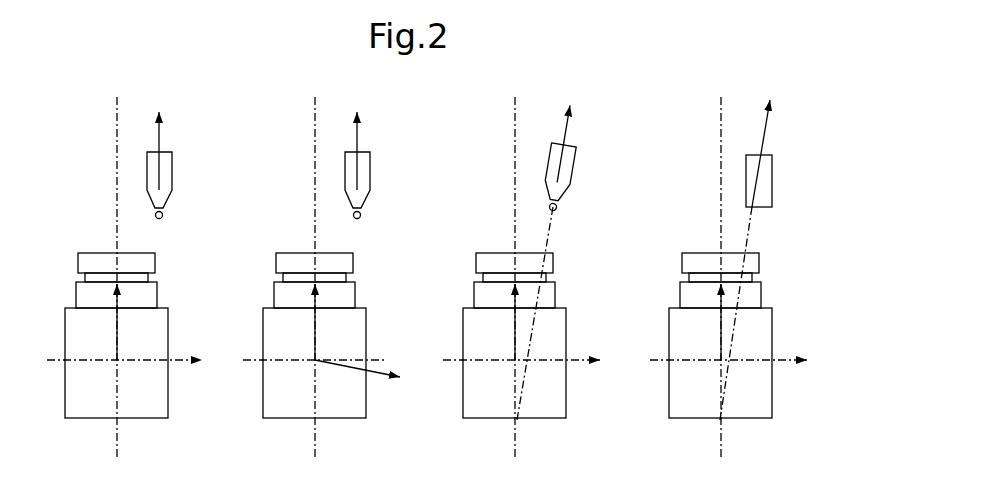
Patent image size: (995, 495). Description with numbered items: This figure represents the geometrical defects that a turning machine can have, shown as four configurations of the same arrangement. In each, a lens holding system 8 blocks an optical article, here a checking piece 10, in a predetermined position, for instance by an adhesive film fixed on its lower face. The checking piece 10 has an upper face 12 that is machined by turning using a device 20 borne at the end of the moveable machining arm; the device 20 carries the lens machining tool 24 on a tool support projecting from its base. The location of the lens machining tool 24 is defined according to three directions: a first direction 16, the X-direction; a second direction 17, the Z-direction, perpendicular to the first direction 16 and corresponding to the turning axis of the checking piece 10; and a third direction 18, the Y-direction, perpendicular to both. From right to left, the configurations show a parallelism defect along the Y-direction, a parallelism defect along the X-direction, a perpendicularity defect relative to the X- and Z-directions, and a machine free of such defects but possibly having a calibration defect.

The lens holding system 8 is at (65, 393).
The checking piece 10 is at (78, 263).
The upper face 12 is at (102, 253).
The first direction 16 is at (141, 362).
The second direction 17 is at (117, 331).
The third direction 18 is at (750, 336).
The device 20 is at (192, 160).
The lens machining tool 24 is at (163, 214).